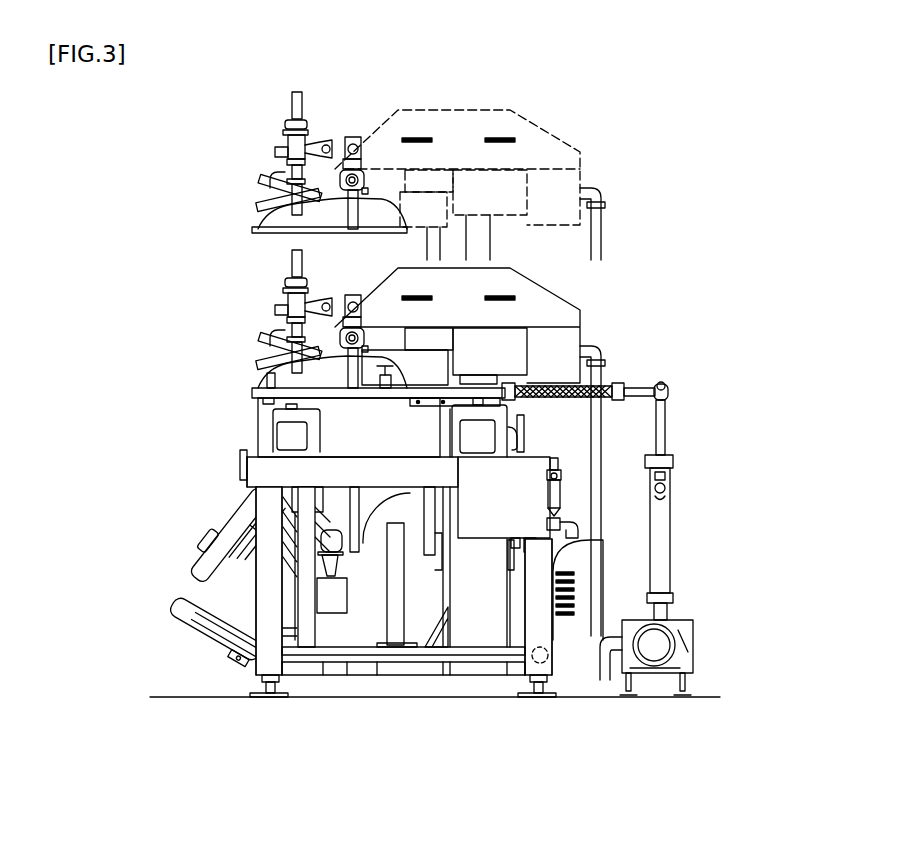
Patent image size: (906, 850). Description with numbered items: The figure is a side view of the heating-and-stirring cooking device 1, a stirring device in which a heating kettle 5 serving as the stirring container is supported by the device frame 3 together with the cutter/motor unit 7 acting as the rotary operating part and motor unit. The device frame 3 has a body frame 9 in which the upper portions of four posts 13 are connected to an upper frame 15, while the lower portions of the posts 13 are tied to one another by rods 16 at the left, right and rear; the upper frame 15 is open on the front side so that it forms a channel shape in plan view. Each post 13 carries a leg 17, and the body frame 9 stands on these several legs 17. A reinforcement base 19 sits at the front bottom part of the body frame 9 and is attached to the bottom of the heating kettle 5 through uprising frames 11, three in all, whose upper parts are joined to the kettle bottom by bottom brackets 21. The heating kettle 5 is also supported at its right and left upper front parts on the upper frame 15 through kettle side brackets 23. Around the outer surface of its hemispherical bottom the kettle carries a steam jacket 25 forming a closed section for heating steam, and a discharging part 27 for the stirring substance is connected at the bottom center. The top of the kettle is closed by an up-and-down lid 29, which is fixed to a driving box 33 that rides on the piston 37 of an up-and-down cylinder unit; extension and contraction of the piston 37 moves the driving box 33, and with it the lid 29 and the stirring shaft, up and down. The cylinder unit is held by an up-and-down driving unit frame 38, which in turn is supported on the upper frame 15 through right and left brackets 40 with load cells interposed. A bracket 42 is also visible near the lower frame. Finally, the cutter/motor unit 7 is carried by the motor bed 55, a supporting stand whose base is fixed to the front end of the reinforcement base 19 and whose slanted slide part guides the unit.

The heating-and-stirring cooking device 1 is at (628, 172).
The device frame 3 is at (288, 442).
The heating kettle 5 is at (313, 398).
The cutter/motor unit 7 is at (195, 561).
The body frame 9 is at (253, 497).
The uprising frame 11 is at (337, 652).
The post 13 is at (258, 660).
The upper frame 15 is at (277, 470).
The rod 16 is at (425, 652).
The leg 17 is at (263, 687).
The reinforcement base 19 is at (393, 678).
The bottom bracket 21 is at (403, 517).
The kettle side bracket 23 is at (252, 466).
The steam jacket 25 is at (378, 505).
The discharging part 27 is at (343, 558).
The up-and-down lid 29 is at (337, 368).
The driving box 33 is at (558, 293).
The piston 37 is at (481, 379).
The up-and-down driving unit frame 38 is at (478, 605).
The bracket on the up-and-down driving unit side 40 is at (482, 441).
The bracket 42 is at (438, 628).
The motor bed 55 is at (299, 609).